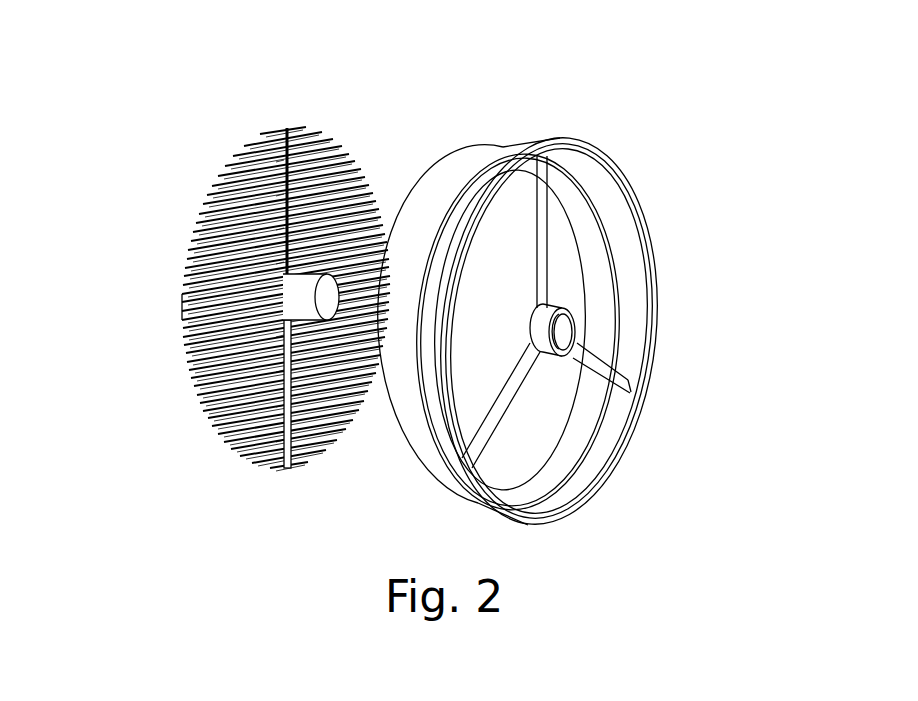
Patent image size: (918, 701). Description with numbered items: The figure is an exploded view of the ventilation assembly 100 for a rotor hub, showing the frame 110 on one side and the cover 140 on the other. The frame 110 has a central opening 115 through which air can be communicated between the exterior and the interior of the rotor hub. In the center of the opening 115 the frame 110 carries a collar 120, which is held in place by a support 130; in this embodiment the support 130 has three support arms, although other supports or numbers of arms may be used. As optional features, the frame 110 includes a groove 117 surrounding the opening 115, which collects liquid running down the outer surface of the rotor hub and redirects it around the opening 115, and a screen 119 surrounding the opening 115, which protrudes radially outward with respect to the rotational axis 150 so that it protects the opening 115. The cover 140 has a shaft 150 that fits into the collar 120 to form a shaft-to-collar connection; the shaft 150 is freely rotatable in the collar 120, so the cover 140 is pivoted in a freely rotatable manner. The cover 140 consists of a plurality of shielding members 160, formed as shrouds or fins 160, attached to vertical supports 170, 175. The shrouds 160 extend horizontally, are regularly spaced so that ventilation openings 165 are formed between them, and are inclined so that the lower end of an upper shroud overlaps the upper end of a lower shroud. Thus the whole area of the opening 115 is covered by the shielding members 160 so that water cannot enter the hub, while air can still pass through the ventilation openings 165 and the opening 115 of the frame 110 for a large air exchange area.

The heat sink assembly 100 is at (678, 44).
The frame 110 is at (558, 290).
The central opening 115 is at (546, 418).
The groove 117 is at (518, 141).
The screen 119 is at (460, 168).
The collar 120 is at (575, 322).
The support 130 is at (622, 382).
The cover 140 is at (231, 302).
The shaft 150 is at (317, 283).
The shielding members 160 is at (190, 375).
The ventilation openings 165 is at (178, 318).
The vertical support 170 is at (290, 460).
The vertical support 175 is at (290, 126).